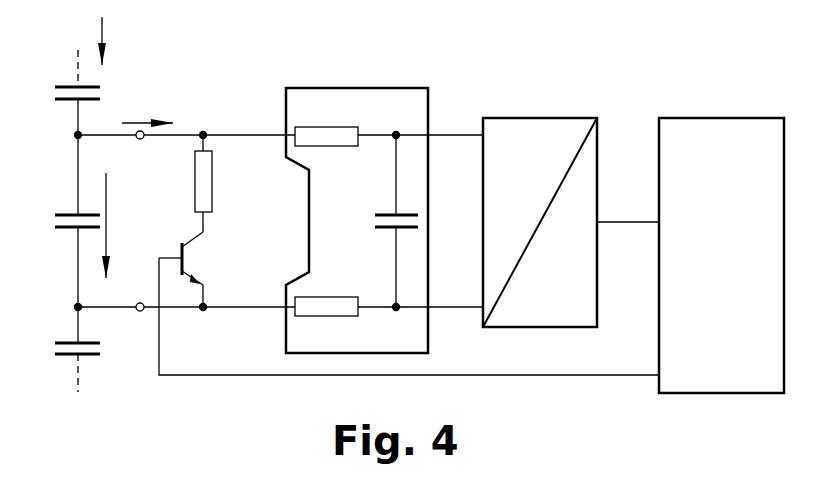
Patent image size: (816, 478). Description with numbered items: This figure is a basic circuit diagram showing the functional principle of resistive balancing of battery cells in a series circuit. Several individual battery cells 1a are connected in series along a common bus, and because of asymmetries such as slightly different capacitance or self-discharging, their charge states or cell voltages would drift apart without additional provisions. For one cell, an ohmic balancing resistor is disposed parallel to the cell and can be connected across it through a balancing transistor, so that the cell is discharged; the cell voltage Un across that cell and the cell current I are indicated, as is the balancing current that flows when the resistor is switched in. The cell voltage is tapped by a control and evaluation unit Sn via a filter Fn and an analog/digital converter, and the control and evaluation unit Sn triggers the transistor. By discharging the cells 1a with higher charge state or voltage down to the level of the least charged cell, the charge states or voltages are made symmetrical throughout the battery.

The battery cell 1a is at (70, 87).
The cell current I is at (103, 27).
The cell voltage Un is at (107, 215).
The filter Fn is at (313, 107).
The control and evaluation unit Sn is at (721, 140).